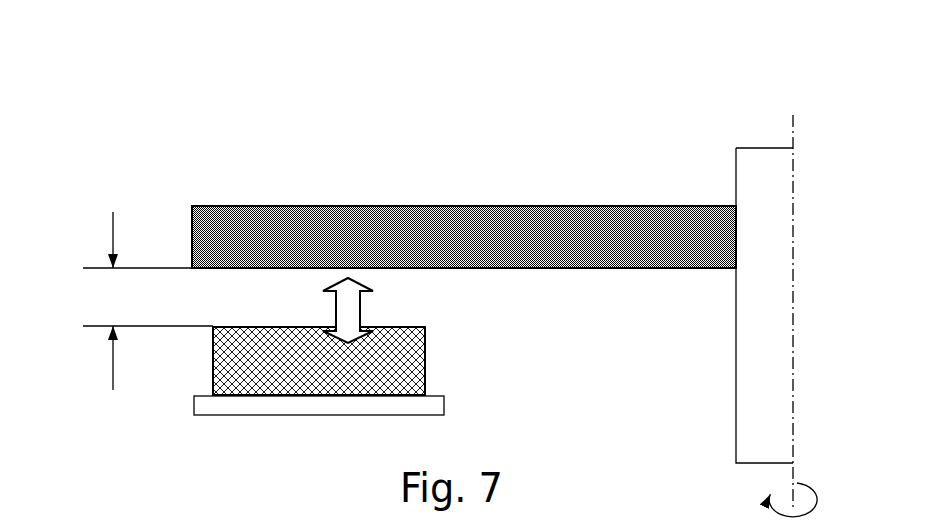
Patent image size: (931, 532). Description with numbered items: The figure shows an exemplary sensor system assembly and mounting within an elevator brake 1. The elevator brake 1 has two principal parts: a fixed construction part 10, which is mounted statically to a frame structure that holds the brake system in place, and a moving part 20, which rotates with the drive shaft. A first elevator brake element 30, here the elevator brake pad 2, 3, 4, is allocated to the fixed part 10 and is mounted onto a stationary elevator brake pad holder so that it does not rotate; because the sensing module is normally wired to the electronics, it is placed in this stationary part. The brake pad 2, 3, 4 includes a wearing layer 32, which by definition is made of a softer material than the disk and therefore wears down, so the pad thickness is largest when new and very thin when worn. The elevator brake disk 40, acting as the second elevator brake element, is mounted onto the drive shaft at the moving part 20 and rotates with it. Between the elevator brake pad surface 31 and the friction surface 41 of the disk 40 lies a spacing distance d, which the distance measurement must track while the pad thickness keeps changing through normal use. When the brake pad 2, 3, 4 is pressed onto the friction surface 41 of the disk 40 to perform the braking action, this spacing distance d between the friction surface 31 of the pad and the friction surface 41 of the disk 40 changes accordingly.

The elevator brake 1 is at (218, 112).
The elevator brake pad 2 is at (212, 423).
The elevator brake pad 3 is at (177, 463).
The elevator brake pad 4 is at (201, 463).
The fixed construction part 10 is at (437, 405).
The moving part 20 is at (765, 143).
The first elevator brake element 30 is at (301, 360).
The elevator brake pad surface 31 is at (407, 323).
The wearing layer 32 is at (415, 366).
The elevator brake disk 40 is at (315, 193).
The friction surface 41 is at (260, 260).
The distance d is at (109, 301).